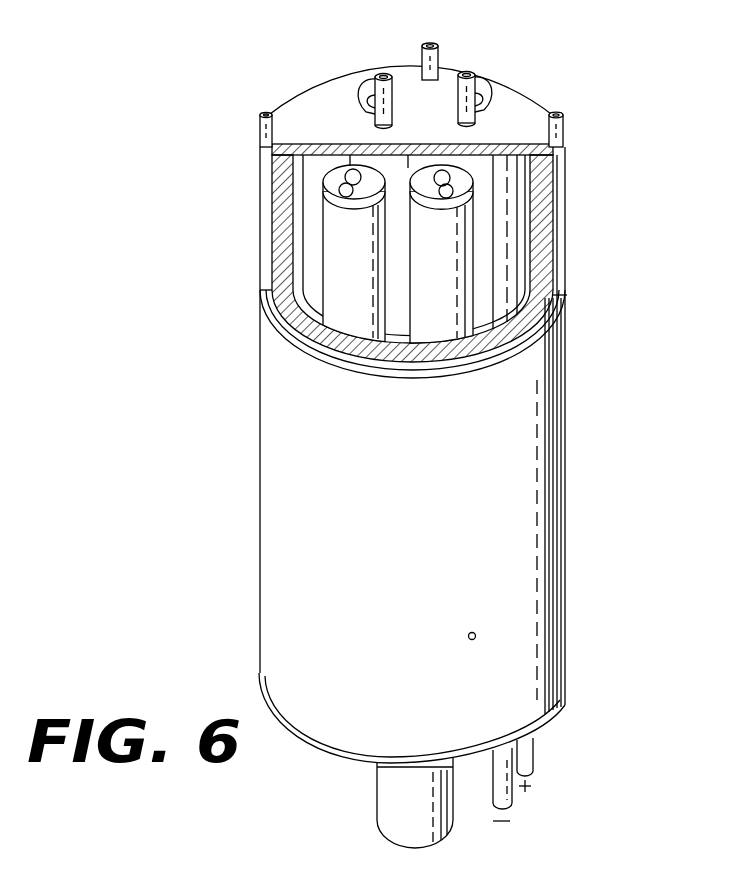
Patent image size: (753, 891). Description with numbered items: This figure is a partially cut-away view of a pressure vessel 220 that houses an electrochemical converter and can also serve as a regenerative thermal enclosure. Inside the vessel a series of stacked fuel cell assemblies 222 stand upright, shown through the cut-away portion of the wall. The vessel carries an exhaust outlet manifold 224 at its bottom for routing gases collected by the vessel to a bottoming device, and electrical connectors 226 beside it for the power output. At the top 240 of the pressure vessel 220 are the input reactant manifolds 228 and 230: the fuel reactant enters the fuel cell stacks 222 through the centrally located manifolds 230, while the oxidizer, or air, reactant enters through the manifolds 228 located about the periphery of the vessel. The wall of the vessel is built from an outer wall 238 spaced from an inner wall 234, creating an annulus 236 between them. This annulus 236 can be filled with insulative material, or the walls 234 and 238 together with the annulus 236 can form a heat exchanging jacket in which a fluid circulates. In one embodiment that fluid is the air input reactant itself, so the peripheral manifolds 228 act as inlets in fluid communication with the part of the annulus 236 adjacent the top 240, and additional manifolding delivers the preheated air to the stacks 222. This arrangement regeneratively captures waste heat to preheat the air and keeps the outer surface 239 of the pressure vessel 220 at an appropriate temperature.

The pressure vessel 220 is at (531, 528).
The stacked fuel cell assemblies 222 is at (330, 223).
The exhaust outlet manifold 224 is at (397, 803).
The electrical connectors 226 is at (526, 773).
The input reactant manifolds 228 is at (258, 126).
The input reactant manifolds 230 is at (383, 73).
The inner wall 234 is at (527, 283).
The annulus 236 is at (550, 304).
The outer wall 238 is at (540, 336).
The outer surface 239 is at (476, 636).
The top 240 is at (500, 113).